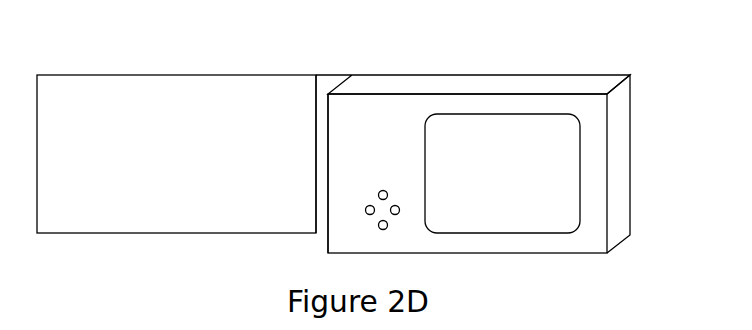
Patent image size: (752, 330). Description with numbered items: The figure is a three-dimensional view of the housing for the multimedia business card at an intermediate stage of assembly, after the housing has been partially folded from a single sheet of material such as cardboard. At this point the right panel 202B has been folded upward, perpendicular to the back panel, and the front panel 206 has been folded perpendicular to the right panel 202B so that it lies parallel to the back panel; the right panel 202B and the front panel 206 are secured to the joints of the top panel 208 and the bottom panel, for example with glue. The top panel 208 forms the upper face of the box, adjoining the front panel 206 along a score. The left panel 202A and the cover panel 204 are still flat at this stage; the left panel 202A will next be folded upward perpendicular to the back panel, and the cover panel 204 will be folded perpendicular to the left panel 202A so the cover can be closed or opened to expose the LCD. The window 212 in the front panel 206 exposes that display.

The cover panel 204 is at (183, 184).
The left panel 202A is at (323, 213).
The right panel 202B is at (618, 164).
The front panel 206 is at (380, 150).
The top panel 208 is at (423, 82).
The display window 212 is at (506, 151).